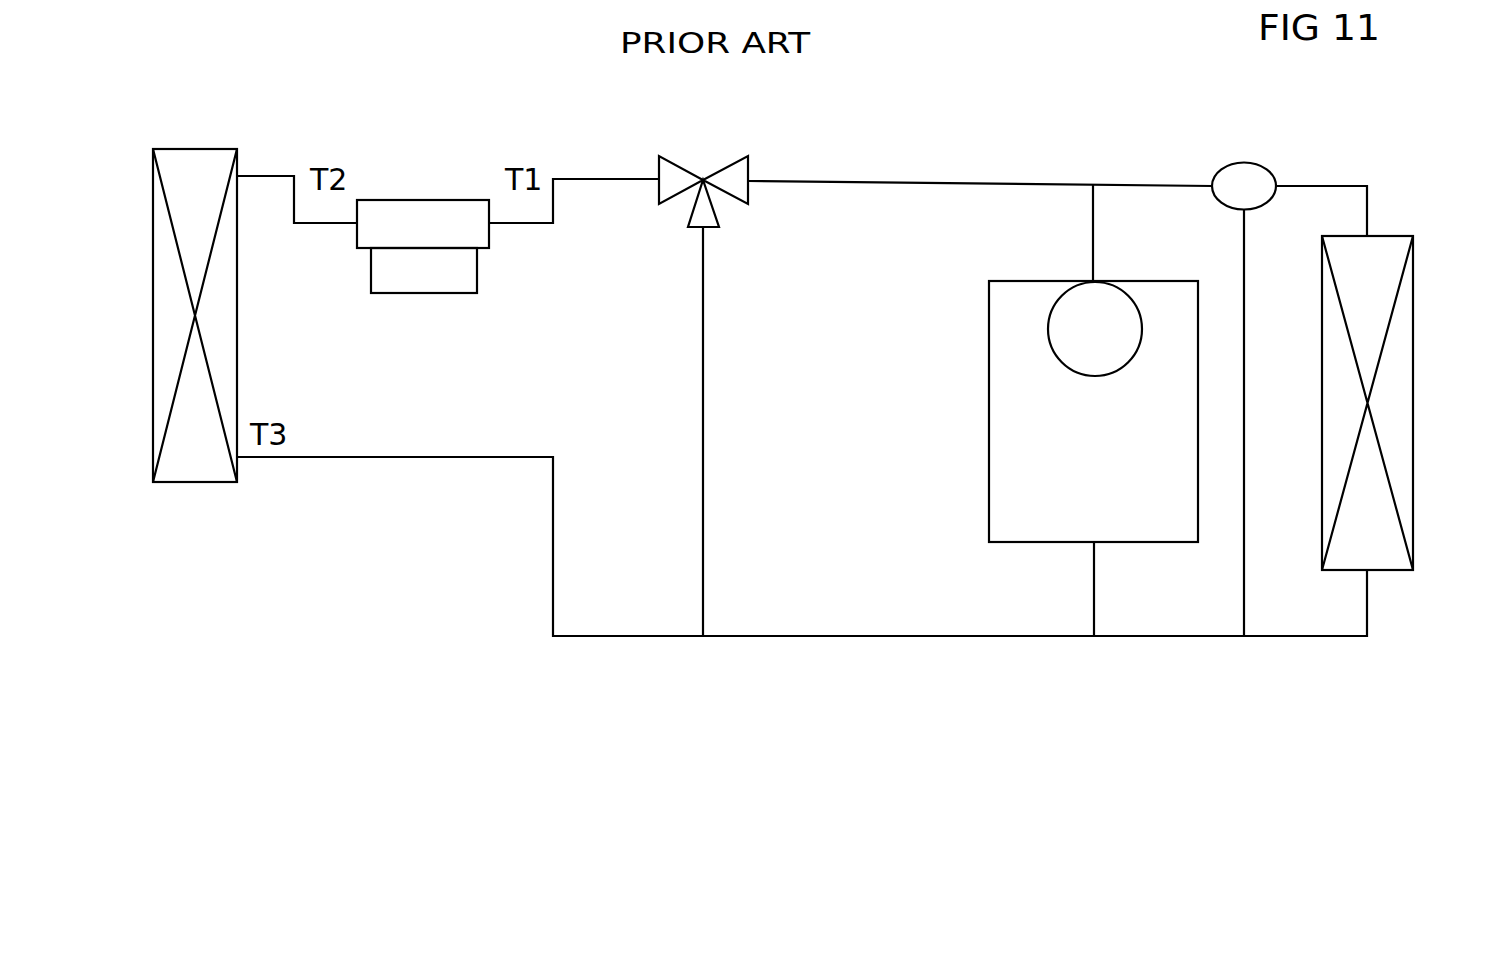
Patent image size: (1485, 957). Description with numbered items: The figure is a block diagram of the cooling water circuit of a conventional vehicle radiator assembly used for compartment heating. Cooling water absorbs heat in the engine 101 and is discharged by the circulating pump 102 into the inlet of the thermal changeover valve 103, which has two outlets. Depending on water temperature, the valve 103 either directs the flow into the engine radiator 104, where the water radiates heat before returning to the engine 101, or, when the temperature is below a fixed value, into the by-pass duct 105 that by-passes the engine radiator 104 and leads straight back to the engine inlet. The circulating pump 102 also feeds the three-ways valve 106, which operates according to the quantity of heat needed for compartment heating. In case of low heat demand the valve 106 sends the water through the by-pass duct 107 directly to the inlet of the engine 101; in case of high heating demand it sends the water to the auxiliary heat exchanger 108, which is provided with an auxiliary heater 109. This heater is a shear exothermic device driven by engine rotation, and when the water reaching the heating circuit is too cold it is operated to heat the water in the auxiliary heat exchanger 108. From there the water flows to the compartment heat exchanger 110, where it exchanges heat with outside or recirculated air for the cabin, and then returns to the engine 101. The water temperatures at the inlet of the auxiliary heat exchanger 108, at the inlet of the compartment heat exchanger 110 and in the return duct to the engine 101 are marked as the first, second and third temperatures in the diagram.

The engine 101 is at (989, 466).
The circulating pump 102 is at (1114, 316).
The thermal changeover valve 103 is at (1250, 180).
The engine radiator 104 is at (1398, 236).
The by-pass duct 105 is at (1248, 606).
The three-ways valve 106 is at (690, 172).
The by-pass duct 107 is at (703, 358).
The auxiliary heat exchanger 108 is at (430, 200).
The auxiliary heater 109 is at (415, 293).
The compartment heat exchanger 110 is at (190, 149).